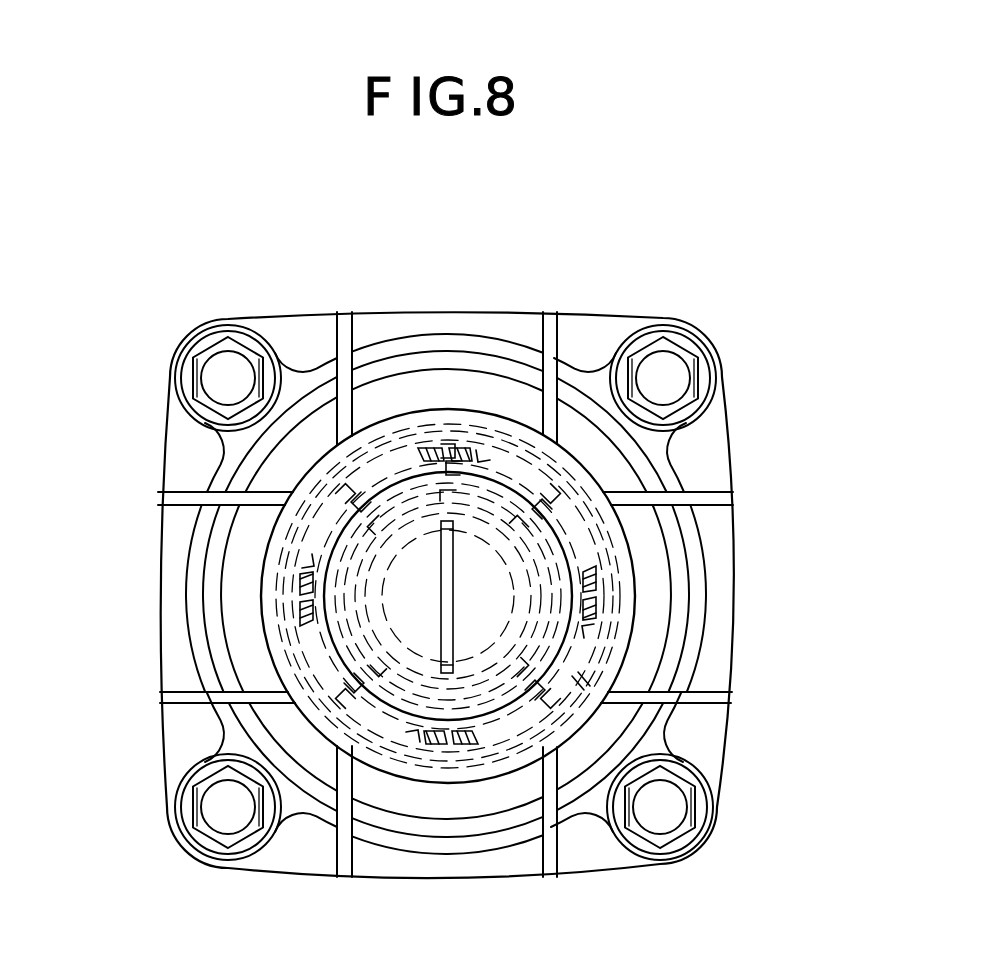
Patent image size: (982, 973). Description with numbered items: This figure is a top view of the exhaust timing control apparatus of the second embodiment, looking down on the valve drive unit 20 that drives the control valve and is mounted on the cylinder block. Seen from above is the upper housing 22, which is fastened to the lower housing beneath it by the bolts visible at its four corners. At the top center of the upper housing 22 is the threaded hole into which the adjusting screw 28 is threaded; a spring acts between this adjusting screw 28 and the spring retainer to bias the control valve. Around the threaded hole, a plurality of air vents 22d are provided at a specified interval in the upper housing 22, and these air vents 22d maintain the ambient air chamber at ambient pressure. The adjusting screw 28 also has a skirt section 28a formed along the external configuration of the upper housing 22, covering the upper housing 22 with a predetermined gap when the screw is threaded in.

The valve drive unit 20 is at (590, 283).
The upper housing 22 is at (706, 452).
The air vents 22d is at (457, 423).
The adjusting screw 28 is at (560, 528).
The skirt section 28a is at (580, 683).